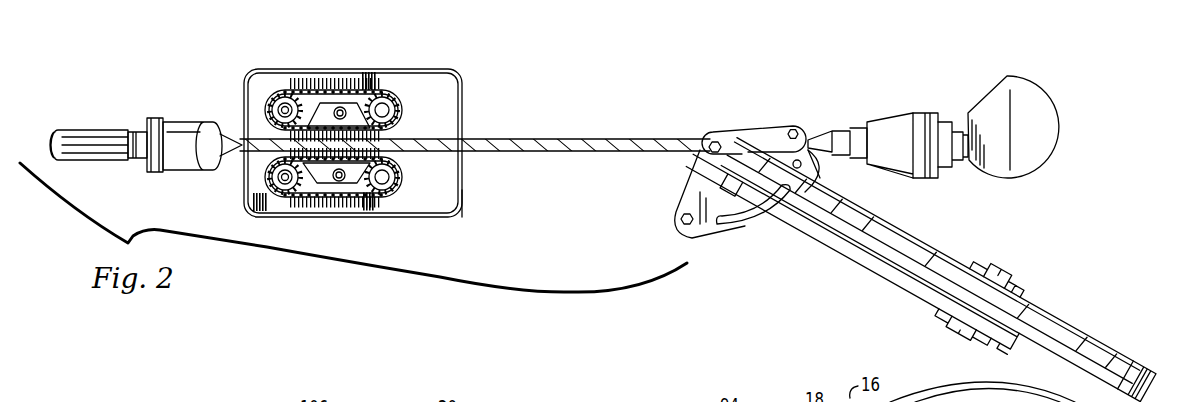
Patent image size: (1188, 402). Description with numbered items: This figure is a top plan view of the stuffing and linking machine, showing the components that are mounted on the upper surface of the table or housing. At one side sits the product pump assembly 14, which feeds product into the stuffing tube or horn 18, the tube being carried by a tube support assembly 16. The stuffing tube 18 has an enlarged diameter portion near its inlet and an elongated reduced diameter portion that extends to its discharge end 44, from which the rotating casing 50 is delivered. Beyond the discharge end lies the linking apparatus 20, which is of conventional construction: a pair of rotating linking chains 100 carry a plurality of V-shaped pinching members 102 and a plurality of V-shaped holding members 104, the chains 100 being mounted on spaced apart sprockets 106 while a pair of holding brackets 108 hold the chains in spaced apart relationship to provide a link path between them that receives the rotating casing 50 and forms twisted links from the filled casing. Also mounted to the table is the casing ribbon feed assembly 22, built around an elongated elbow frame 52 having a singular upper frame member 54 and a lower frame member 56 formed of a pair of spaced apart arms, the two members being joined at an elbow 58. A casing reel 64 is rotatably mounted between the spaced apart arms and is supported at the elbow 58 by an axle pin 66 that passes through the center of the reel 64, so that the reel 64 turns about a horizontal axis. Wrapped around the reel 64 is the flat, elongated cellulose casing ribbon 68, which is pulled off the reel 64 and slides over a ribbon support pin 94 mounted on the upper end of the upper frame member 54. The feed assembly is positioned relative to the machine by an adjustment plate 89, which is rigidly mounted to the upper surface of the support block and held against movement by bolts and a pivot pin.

The product pump assembly 14 is at (1023, 168).
The tube support assembly 16 is at (912, 110).
The stuffing tube 18 is at (783, 140).
The linking apparatus 20 is at (445, 87).
The casing ribbon feed assembly 22 is at (920, 270).
The discharge end 44 is at (460, 198).
The rotating casing 50 is at (547, 152).
The elongated elbow frame 52 is at (968, 245).
The upper frame member 54 is at (900, 280).
The lower frame member 56 is at (892, 213).
The elbow 58 is at (997, 333).
The casing reel 64 is at (1088, 340).
The axle pin 66 is at (935, 318).
The casing ribbon 68 is at (738, 128).
The adjustment plate 89 is at (678, 212).
The ribbon support pin 94 is at (815, 168).
The linking chains 100 is at (376, 88).
The V-shaped pinching members 102 is at (402, 96).
The V-shaped holding members 104 is at (268, 105).
The sprockets 106 is at (285, 93).
The holding brackets 108 is at (342, 106).